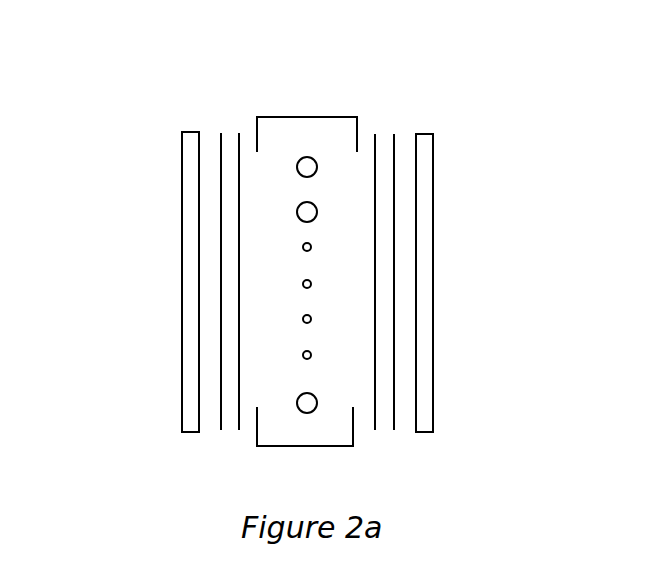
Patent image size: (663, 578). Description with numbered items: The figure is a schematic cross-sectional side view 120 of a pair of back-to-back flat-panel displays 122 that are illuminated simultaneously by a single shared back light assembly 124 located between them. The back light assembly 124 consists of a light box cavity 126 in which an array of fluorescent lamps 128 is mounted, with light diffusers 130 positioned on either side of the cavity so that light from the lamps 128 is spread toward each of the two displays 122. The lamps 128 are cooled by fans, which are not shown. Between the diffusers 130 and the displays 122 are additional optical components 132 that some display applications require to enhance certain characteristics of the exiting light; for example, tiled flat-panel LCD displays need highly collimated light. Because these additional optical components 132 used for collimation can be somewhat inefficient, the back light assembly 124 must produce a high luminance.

The side view 120 is at (312, 252).
The back-to-back flat-panel displays 122 is at (182, 292).
The back light assembly 124 is at (305, 112).
The light box cavity 126 is at (335, 430).
The array of fluorescent lamps 128 is at (313, 221).
The light diffusers 130 is at (239, 195).
The additional optical components 132 is at (221, 243).